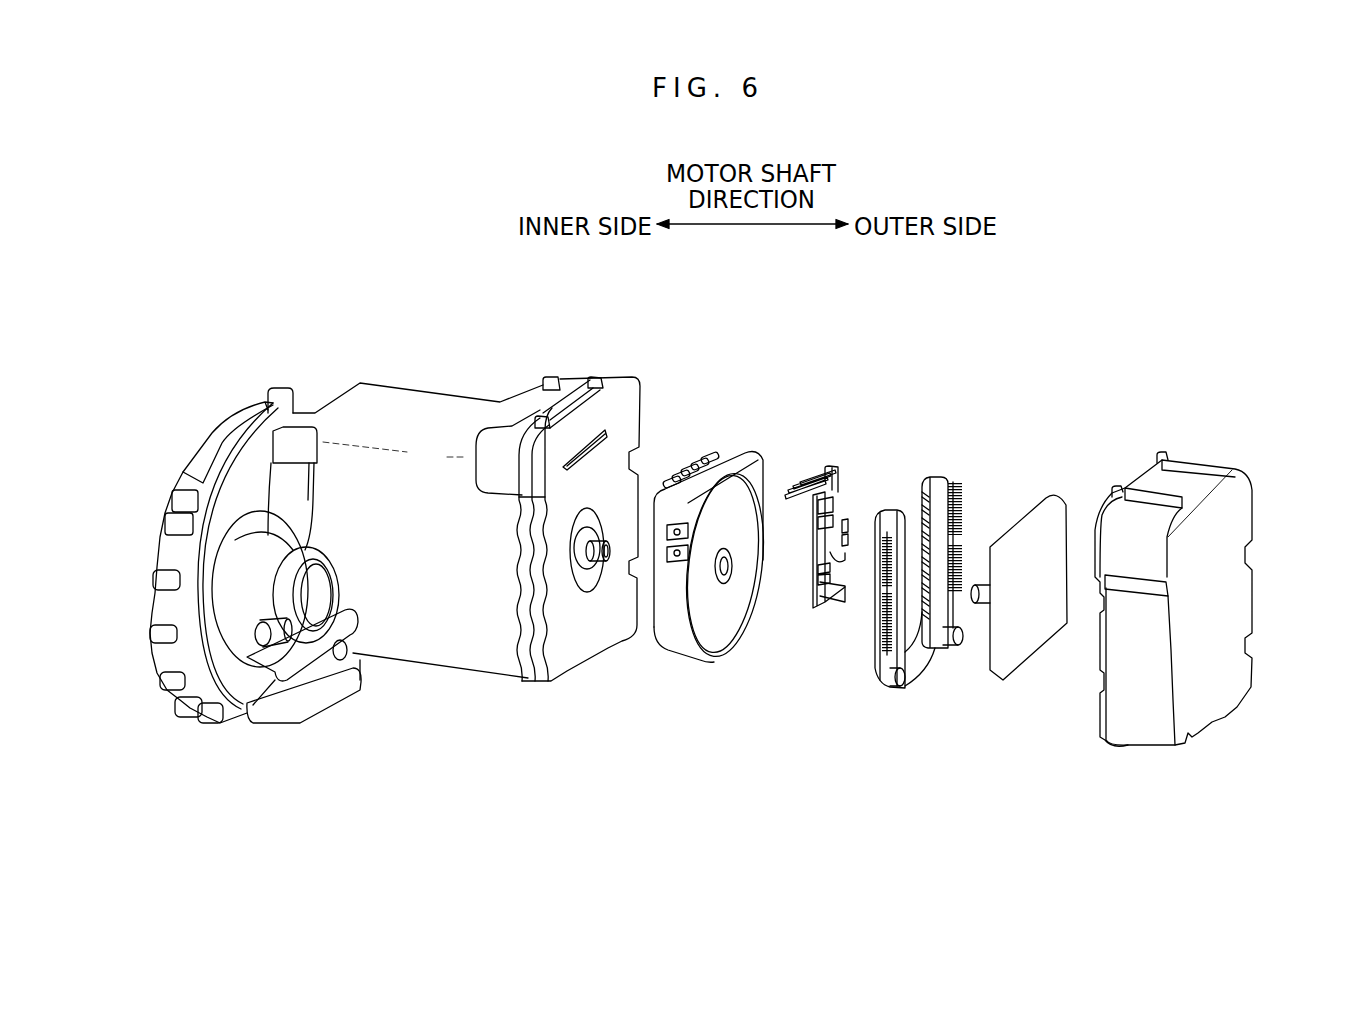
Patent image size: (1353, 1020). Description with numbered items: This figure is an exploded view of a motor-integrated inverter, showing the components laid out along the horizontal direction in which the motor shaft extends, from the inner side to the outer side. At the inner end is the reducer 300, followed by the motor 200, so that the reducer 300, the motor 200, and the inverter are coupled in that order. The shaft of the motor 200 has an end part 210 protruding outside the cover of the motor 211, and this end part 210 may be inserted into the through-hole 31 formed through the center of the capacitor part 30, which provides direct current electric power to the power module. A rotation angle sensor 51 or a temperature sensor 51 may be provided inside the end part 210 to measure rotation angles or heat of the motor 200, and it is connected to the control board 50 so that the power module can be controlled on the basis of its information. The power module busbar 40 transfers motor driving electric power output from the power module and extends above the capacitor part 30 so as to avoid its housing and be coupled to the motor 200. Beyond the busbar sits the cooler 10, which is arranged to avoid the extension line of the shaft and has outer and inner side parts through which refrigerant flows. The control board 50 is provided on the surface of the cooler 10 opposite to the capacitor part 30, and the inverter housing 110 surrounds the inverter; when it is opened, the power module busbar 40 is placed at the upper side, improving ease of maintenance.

The reducer 300 is at (202, 452).
The motor 200 is at (441, 402).
The end part of the shaft 210 is at (613, 643).
The cover of the motor 211 is at (597, 570).
The capacitor part 30 is at (733, 453).
The through-hole 31 is at (727, 566).
The power module busbar 40 is at (828, 466).
The cooler 10 is at (935, 477).
The control board 50 is at (1040, 517).
The rotation angle sensor or temperature sensor 51 is at (978, 605).
The inverter housing 110 is at (1186, 473).